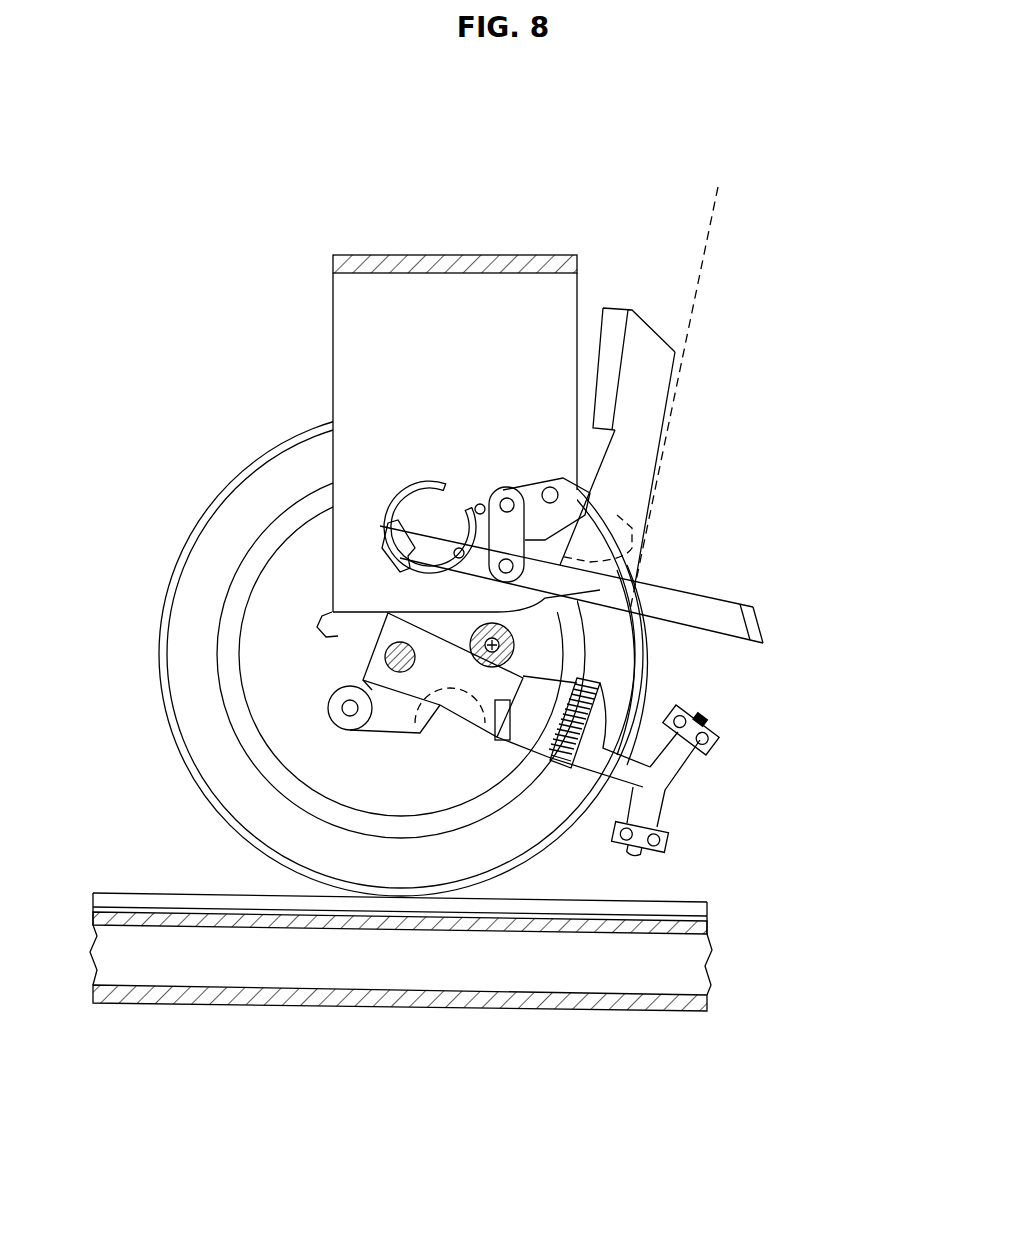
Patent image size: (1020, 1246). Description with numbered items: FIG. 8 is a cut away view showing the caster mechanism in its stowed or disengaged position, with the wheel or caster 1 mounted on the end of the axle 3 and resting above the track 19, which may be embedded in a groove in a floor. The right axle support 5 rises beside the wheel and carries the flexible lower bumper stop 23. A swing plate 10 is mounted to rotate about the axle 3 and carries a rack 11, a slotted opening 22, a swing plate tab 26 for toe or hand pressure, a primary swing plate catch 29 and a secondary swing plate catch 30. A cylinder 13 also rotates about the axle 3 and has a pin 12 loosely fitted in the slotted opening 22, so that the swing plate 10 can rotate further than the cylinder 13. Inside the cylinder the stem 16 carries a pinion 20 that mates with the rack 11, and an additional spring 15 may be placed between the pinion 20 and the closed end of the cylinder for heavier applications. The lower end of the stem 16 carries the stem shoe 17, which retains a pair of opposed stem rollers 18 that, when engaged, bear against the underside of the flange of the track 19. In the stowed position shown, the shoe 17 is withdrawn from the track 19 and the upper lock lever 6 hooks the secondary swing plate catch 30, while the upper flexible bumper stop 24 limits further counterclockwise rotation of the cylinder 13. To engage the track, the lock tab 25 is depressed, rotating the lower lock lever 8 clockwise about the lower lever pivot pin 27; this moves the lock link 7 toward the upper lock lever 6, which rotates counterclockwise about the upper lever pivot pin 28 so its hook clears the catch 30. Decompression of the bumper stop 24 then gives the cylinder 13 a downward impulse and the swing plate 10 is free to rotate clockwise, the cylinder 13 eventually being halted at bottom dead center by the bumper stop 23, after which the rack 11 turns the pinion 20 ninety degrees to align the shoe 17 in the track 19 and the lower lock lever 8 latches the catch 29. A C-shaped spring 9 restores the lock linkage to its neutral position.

The caster 1 is at (183, 525).
The axle 3 is at (383, 637).
The right axle support 5 is at (330, 328).
The upper lock lever 6 is at (620, 514).
The lock link 7 is at (487, 483).
The lower lock lever 8 is at (670, 583).
The C-shaped spring 9 is at (397, 483).
The swing plate 10 is at (672, 405).
The rack 11 is at (603, 678).
The pin 12 is at (495, 715).
The cylinder 13 is at (445, 722).
The additional spring 15 is at (533, 747).
The stem 16 is at (595, 763).
The stem shoe 17 is at (685, 770).
The stem rollers 18 is at (665, 855).
The track 19 is at (133, 888).
The pinion 20 is at (558, 768).
The slotted opening 22 is at (523, 668).
The flexible lower bumper stop 23 is at (325, 702).
The upper flexible bumper stop 24 is at (518, 640).
The lock tab 25 is at (760, 625).
The swing plate tab 26 is at (612, 305).
The lower lever pivot pin 27 is at (457, 537).
The upper lever pivot pin 28 is at (547, 477).
The primary swing plate catch 29 is at (318, 628).
The secondary swing plate catch 30 is at (685, 385).